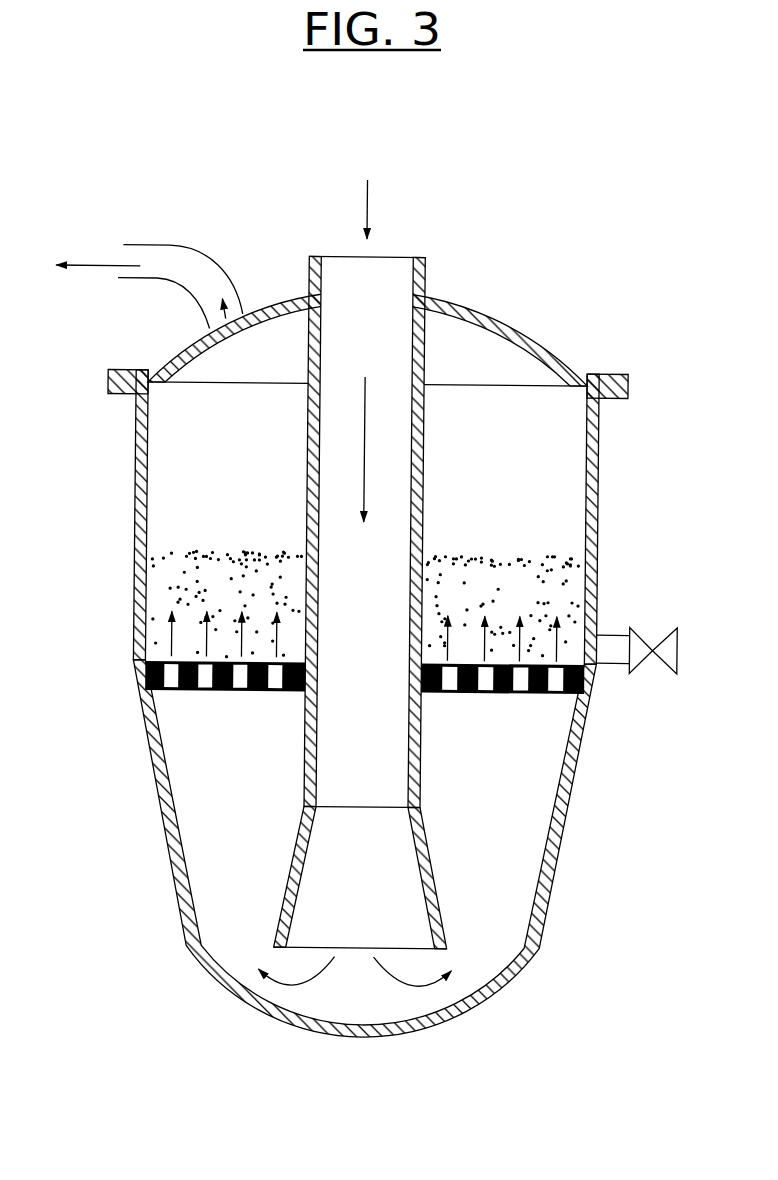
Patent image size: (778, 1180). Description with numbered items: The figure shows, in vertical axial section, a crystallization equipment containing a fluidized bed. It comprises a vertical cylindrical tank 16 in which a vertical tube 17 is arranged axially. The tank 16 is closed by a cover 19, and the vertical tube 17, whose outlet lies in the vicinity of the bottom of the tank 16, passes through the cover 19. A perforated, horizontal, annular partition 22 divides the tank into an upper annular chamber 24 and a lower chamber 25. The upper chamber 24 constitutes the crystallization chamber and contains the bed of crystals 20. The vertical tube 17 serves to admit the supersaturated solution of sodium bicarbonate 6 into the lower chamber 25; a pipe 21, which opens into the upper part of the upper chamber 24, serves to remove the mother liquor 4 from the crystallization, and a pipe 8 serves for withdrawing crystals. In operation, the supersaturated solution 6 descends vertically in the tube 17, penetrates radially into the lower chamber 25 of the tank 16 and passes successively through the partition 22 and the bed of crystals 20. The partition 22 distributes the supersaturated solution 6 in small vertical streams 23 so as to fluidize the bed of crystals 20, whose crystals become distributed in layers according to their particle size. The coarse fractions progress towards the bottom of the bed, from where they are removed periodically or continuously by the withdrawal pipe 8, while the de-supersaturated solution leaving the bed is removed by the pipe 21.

The mother liquor 4 is at (90, 269).
The supersaturated solution of sodium bicarbonate 6 is at (364, 205).
The withdrawal pipe 8 is at (605, 634).
The vertical cylindrical tank 16 is at (597, 561).
The vertical tube 17 is at (422, 368).
The cover 19 is at (486, 310).
The bed of crystals 20 is at (245, 606).
The pipe 21 is at (145, 247).
The perforated horizontal annular partition 22 is at (188, 692).
The small vertical streams 23 is at (207, 645).
The upper annular chamber 24 is at (567, 478).
The lower chamber 25 is at (542, 805).